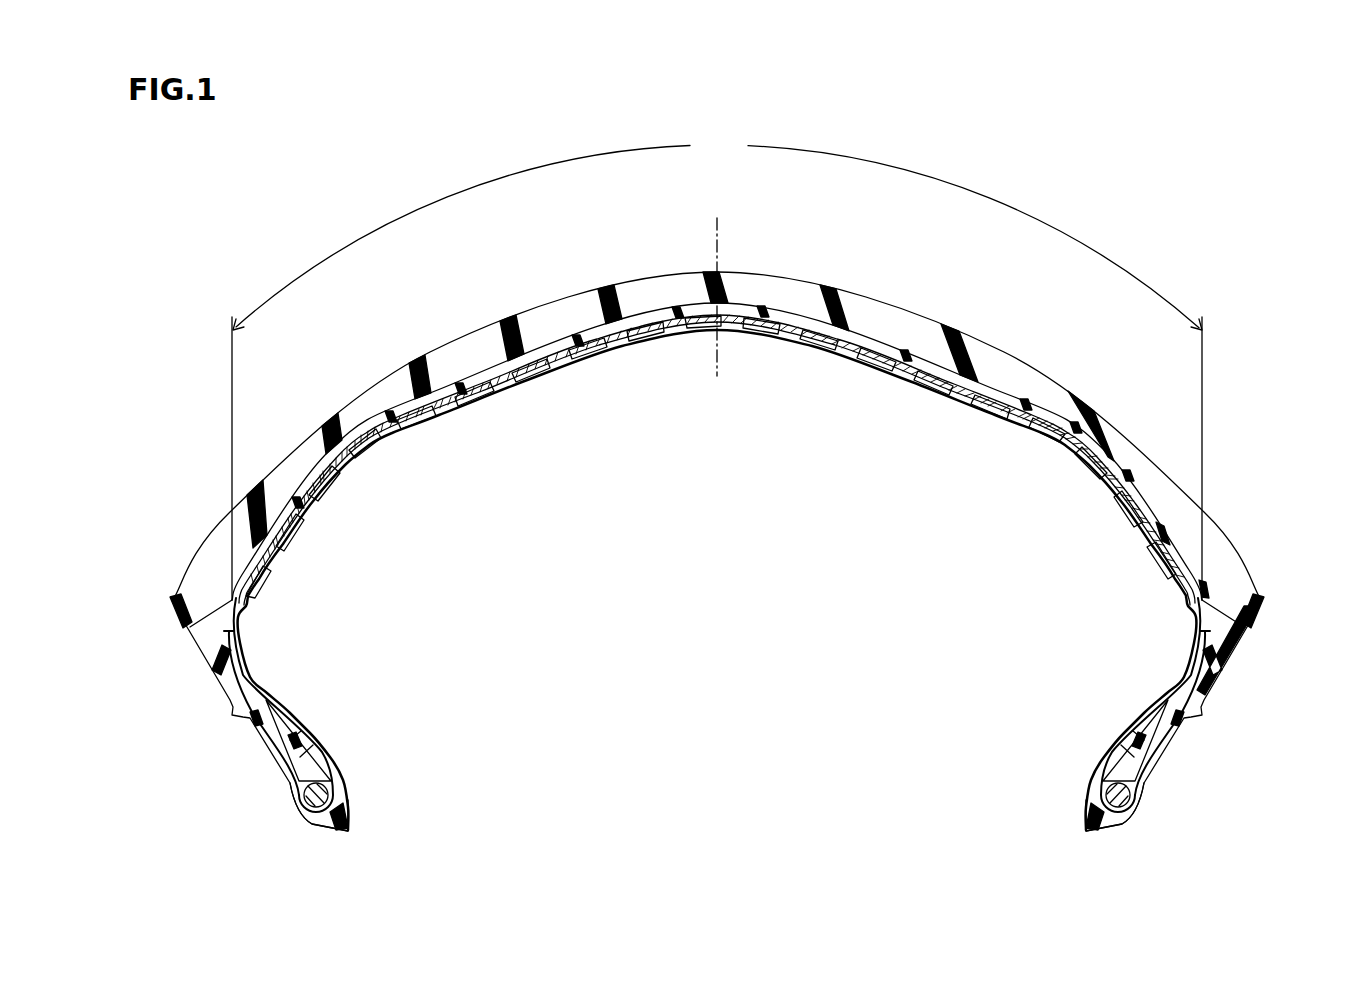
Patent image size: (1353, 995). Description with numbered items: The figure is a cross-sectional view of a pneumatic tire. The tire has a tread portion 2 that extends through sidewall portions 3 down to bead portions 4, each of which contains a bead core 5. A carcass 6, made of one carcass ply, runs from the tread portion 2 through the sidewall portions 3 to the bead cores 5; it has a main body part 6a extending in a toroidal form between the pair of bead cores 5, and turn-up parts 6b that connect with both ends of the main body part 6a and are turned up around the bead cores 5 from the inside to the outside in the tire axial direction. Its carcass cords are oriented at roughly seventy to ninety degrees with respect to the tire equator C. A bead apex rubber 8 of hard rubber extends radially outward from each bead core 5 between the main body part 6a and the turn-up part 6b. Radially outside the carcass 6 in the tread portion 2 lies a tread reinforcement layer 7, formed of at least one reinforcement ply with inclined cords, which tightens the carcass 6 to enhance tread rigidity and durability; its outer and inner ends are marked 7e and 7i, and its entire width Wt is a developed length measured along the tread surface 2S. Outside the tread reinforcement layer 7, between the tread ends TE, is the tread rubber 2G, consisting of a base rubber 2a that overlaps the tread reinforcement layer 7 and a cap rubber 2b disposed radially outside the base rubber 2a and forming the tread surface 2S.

The tread portion 2 is at (444, 339).
The tread surface 2S is at (543, 297).
The tread rubber 2G is at (883, 235).
The base rubber 2a is at (862, 327).
The cap rubber 2b is at (777, 290).
The sidewall portion 3 is at (222, 707).
The bead portion 4 is at (285, 796).
The bead core 5 is at (320, 794).
The carcass 6 is at (1062, 622).
The main body part 6a is at (1193, 630).
The turn-up part 6b is at (1174, 688).
The tread reinforcement layer 7 is at (356, 460).
The band ply outer end 7e is at (228, 600).
The band ply inner end 7i is at (1206, 600).
The bead apex rubber 8 is at (300, 752).
The tread end TE is at (171, 598).
The entire width Wt is at (717, 367).
The tire equator C is at (715, 311).